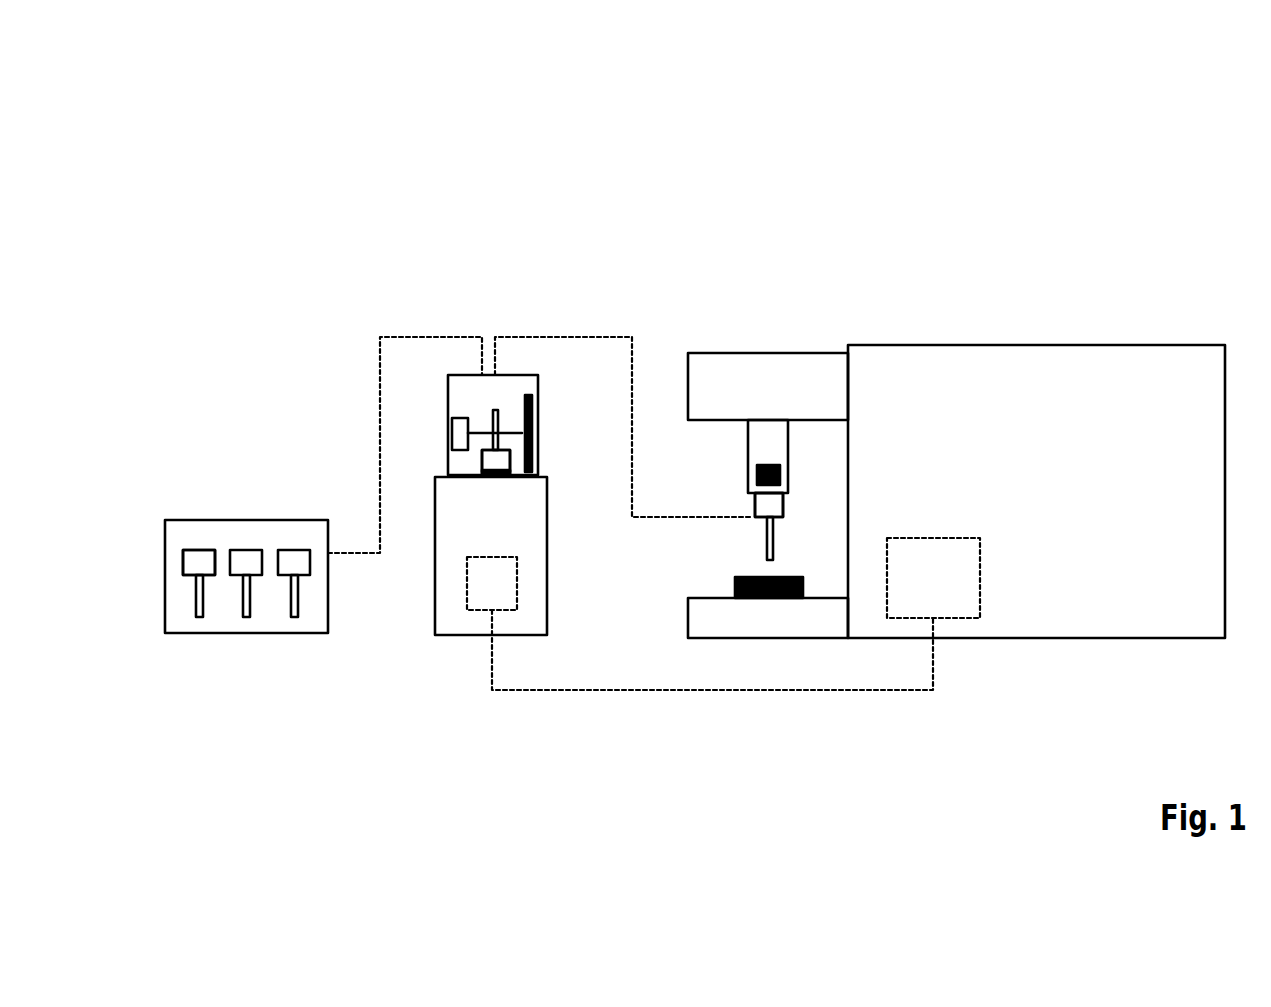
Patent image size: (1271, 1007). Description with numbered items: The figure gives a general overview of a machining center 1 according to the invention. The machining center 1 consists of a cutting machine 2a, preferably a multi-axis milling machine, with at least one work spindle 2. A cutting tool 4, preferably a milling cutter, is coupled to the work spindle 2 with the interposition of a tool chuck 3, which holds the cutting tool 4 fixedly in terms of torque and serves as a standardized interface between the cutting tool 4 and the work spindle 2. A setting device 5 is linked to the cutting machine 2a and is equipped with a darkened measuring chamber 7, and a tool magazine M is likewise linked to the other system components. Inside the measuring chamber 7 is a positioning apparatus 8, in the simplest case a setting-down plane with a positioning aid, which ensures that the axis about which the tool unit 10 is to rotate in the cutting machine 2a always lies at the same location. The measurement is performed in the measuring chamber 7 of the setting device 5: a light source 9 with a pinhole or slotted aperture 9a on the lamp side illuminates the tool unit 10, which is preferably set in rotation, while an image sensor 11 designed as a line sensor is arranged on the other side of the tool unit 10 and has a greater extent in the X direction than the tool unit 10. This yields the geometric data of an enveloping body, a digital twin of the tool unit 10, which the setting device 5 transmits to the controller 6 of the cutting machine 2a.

The machining center 1 is at (652, 208).
The work spindle 2 is at (752, 449).
The cutting machine 2a is at (764, 368).
The tool chuck 3 is at (196, 558).
The cutting tool 4 is at (197, 607).
The setting device 5 is at (437, 622).
The controller of the cutting machine 6 is at (958, 612).
The darkened measuring chamber 7 is at (510, 385).
The positioning apparatus 8 is at (489, 478).
The light source 9 is at (314, 414).
The pinhole or slotted aperture 9a is at (452, 433).
The tool unit to be measured 10 is at (178, 561).
The image sensor 11 is at (531, 410).
The tool magazine M is at (258, 631).